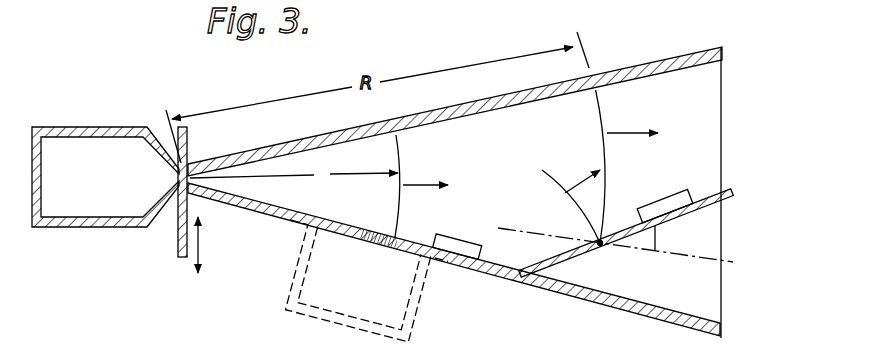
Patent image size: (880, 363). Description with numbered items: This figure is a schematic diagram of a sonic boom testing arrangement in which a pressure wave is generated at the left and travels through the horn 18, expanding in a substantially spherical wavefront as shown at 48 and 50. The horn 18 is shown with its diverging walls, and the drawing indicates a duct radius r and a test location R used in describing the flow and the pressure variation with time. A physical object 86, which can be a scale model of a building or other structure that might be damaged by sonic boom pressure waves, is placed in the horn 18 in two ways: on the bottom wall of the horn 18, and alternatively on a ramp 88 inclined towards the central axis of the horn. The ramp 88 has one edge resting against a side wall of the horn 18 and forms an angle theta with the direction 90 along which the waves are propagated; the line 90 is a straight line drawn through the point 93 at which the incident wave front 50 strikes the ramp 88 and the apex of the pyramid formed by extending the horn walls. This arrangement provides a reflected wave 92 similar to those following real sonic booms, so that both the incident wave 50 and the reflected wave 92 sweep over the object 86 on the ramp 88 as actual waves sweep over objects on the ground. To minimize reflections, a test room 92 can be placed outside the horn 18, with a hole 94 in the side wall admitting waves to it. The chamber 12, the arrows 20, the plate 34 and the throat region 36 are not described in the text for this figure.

The combustion chamber 12 is at (82, 128).
The horn 18 is at (455, 178).
The exhaust gas flow 20 is at (656, 172).
The slide plate 34 is at (179, 236).
The throat 36 is at (190, 153).
The spherical wavefront 48 is at (396, 131).
The incident wave front 50 is at (601, 108).
The physical object 86 is at (452, 247).
The ramp 88 is at (733, 193).
The direction of wave propagation 90 is at (728, 258).
The reflected wave 92 is at (556, 176).
The point 93 is at (601, 249).
The hole 94 is at (360, 257).